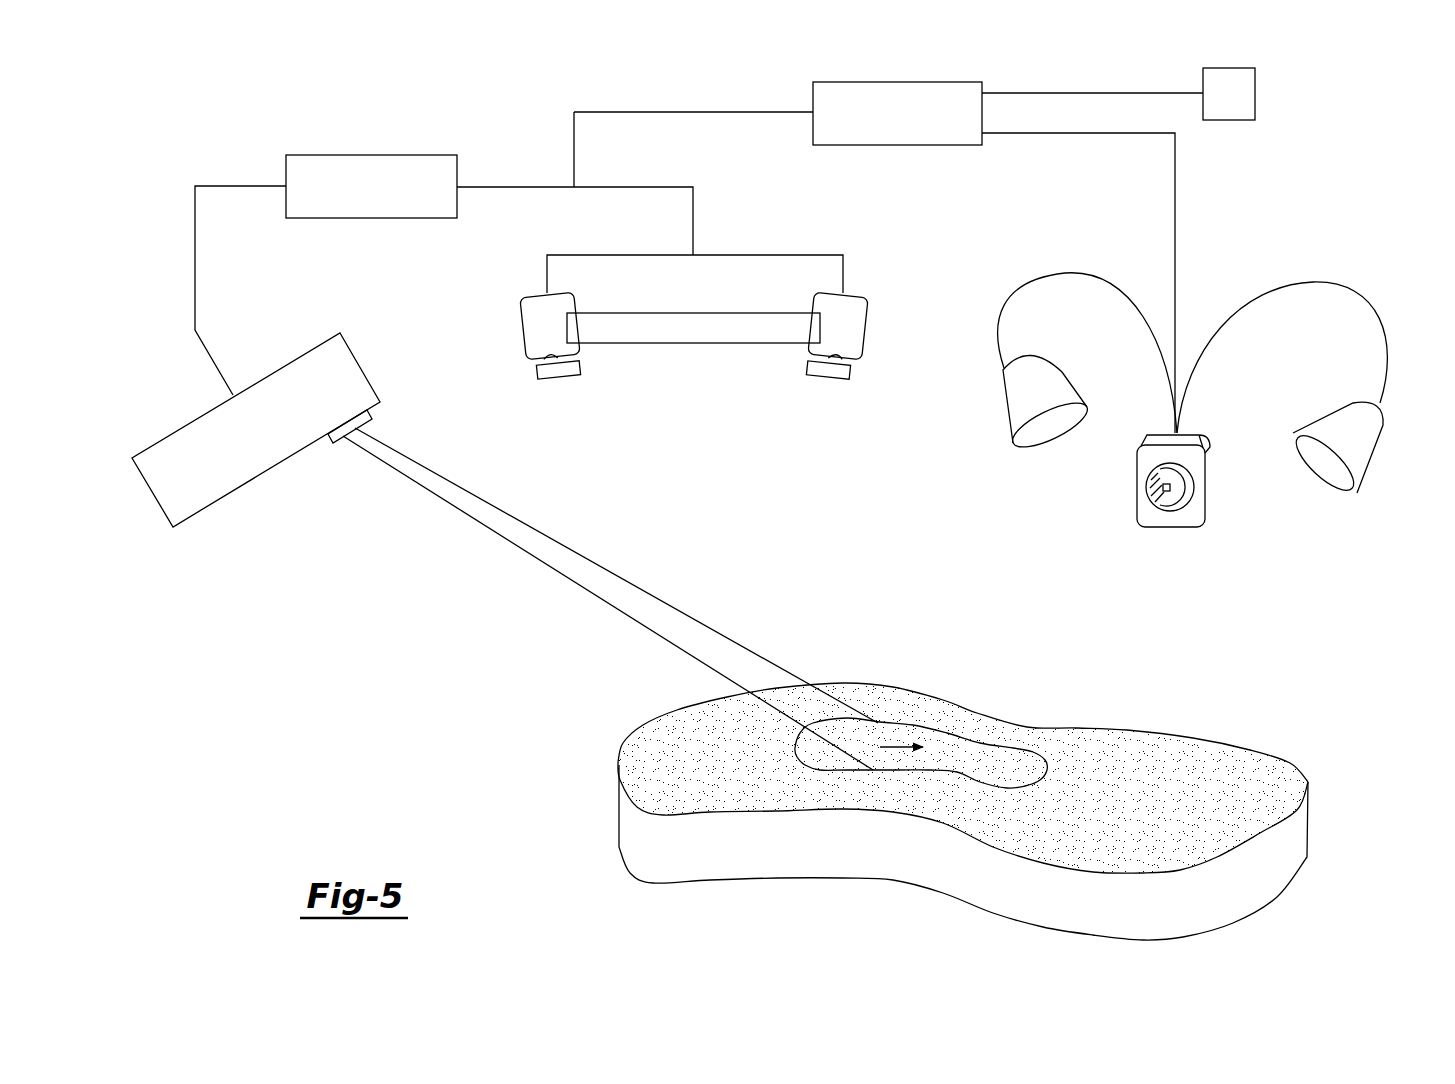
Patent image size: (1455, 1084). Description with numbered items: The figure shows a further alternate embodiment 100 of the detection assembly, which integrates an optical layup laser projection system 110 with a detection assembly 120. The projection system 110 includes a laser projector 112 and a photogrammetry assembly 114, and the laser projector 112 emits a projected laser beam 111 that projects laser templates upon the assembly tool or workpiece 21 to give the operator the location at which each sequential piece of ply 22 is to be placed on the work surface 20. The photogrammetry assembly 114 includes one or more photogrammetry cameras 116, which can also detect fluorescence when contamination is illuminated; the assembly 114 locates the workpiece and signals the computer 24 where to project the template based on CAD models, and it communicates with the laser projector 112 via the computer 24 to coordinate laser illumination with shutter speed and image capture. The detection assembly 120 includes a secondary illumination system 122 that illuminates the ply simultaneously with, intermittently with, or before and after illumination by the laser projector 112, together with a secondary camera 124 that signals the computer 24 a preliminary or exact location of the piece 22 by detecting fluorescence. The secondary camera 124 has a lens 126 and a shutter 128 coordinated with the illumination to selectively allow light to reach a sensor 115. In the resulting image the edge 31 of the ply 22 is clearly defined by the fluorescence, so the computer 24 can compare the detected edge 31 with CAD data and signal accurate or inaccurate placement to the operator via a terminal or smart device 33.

The alternate embodiment 100 is at (222, 118).
The optical layup laser projection system 110 is at (160, 280).
The laser projector 112 is at (232, 446).
The jet of printing material 111 is at (567, 547).
The computer 24 is at (813, 88).
The smart device 33 is at (1242, 106).
The photogrammetry assembly 114 is at (495, 295).
The photogrammetry camera 116 is at (530, 325).
The lens 126 is at (555, 355).
The detection assembly 120 is at (1230, 246).
The secondary illumination system 122 is at (1020, 400).
The secondary camera 124 is at (1135, 468).
The shutter 128 is at (1150, 495).
The sensor 115 is at (1170, 488).
The work surface 20 is at (1185, 752).
The workpiece 21 is at (1290, 857).
The ply 22 is at (993, 757).
The edge 31 is at (910, 723).